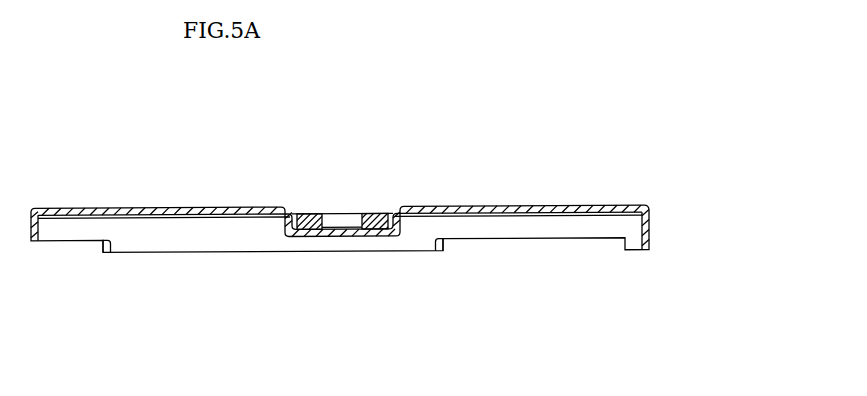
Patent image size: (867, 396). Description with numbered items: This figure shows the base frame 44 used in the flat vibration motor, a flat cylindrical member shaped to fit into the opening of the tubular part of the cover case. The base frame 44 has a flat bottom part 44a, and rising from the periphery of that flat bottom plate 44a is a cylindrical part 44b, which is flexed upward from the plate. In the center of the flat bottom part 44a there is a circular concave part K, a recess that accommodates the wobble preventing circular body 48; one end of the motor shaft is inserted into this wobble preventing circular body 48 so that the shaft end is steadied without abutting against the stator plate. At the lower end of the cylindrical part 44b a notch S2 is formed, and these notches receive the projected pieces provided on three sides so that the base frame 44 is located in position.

The base frame 44 is at (202, 252).
The flat bottom part 44a is at (551, 206).
The cylindrical part 44b is at (649, 224).
The wobble preventing circular body 48 is at (372, 224).
The circular concave part K is at (340, 227).
The notch S2 is at (550, 273).